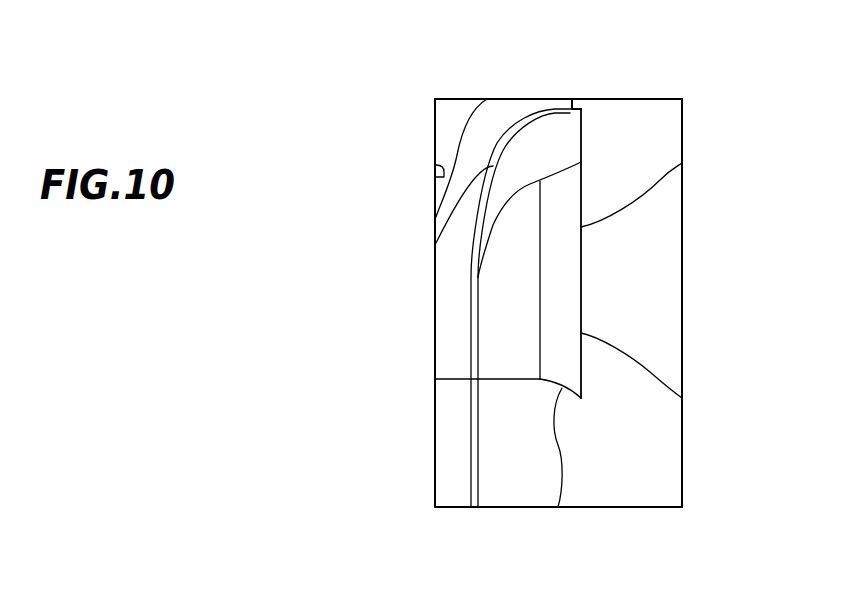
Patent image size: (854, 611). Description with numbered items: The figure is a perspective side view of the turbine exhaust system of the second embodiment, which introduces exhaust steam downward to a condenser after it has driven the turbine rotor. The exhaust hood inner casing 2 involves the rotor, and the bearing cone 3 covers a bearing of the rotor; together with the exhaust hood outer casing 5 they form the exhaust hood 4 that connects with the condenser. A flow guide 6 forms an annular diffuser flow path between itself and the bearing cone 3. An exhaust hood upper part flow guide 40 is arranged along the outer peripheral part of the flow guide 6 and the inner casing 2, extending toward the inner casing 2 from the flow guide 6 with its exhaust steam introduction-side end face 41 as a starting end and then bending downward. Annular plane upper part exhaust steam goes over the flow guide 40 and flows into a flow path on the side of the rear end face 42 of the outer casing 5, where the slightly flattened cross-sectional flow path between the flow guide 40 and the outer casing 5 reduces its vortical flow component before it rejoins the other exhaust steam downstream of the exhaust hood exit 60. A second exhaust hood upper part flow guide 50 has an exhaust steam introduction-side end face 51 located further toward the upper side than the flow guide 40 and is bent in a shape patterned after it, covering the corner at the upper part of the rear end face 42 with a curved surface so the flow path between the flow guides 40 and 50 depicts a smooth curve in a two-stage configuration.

The exhaust hood inner casing 2 is at (436, 164).
The bearing cone 3 is at (674, 172).
The exhaust hood 4 is at (660, 424).
The exhaust hood outer casing 5 is at (460, 99).
The flow guide 6 is at (558, 507).
The exhaust hood upper part flow guide 40 is at (470, 417).
The exhaust steam introduction-side end face 41 is at (582, 127).
The rear end face 42 is at (435, 118).
The second exhaust hood upper part flow guide 50 is at (441, 190).
The exhaust steam introduction-side end face 51 is at (578, 100).
The exhaust hood exit 60 is at (610, 495).